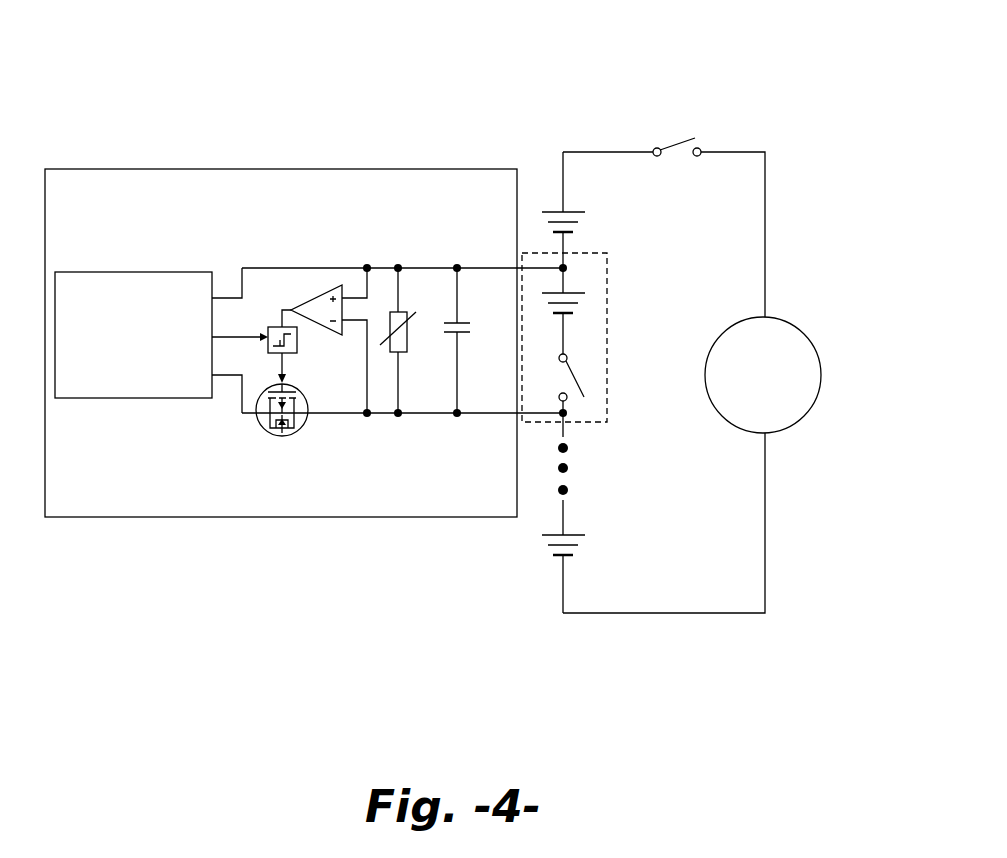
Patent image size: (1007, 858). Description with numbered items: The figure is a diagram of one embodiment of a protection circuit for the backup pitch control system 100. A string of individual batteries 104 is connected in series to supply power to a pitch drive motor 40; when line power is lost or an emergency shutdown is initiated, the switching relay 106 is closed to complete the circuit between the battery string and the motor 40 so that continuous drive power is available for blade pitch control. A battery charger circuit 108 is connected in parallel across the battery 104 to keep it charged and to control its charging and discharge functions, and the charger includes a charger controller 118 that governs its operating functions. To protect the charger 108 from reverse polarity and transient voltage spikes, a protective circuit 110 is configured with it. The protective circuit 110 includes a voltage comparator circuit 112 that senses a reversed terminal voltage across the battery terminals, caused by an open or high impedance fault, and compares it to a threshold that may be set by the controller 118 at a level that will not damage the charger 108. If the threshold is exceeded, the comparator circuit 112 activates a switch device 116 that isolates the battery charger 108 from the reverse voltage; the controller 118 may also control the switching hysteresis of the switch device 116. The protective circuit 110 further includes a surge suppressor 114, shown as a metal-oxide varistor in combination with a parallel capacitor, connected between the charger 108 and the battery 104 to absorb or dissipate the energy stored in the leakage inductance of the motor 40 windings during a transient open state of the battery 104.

The system 100 is at (768, 84).
The battery 104 is at (608, 292).
The switching relay 106 is at (673, 140).
The battery charger circuit 108 is at (110, 169).
The protective circuit 110 is at (414, 196).
The voltage comparator circuit 112 is at (266, 286).
The surge suppressor 114 is at (416, 300).
The switch device 116 is at (297, 440).
The charger controller 118 is at (127, 272).
The pitch drive motor 40 is at (800, 322).